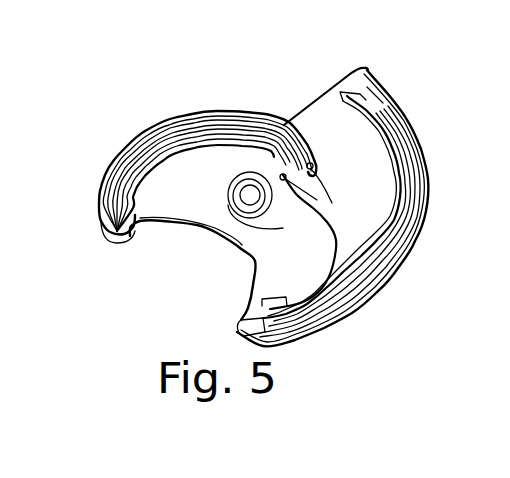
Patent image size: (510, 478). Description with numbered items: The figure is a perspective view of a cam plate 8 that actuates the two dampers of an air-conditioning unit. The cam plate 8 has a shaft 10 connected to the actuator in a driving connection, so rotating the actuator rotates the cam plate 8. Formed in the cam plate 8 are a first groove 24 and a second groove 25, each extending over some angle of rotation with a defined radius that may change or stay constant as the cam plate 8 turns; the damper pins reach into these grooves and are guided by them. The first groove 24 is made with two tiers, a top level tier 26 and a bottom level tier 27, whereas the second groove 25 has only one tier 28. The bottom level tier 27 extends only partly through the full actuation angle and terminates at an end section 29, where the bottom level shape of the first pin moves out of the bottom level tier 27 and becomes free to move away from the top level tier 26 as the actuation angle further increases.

The cam plate 8 is at (173, 200).
The shaft 10 is at (250, 197).
The first groove 24 is at (171, 124).
The second groove 25 is at (402, 142).
The top level tier 26 is at (320, 207).
The bottom level tier 27 is at (126, 151).
The tier 28 is at (412, 178).
The end section 29 is at (283, 192).